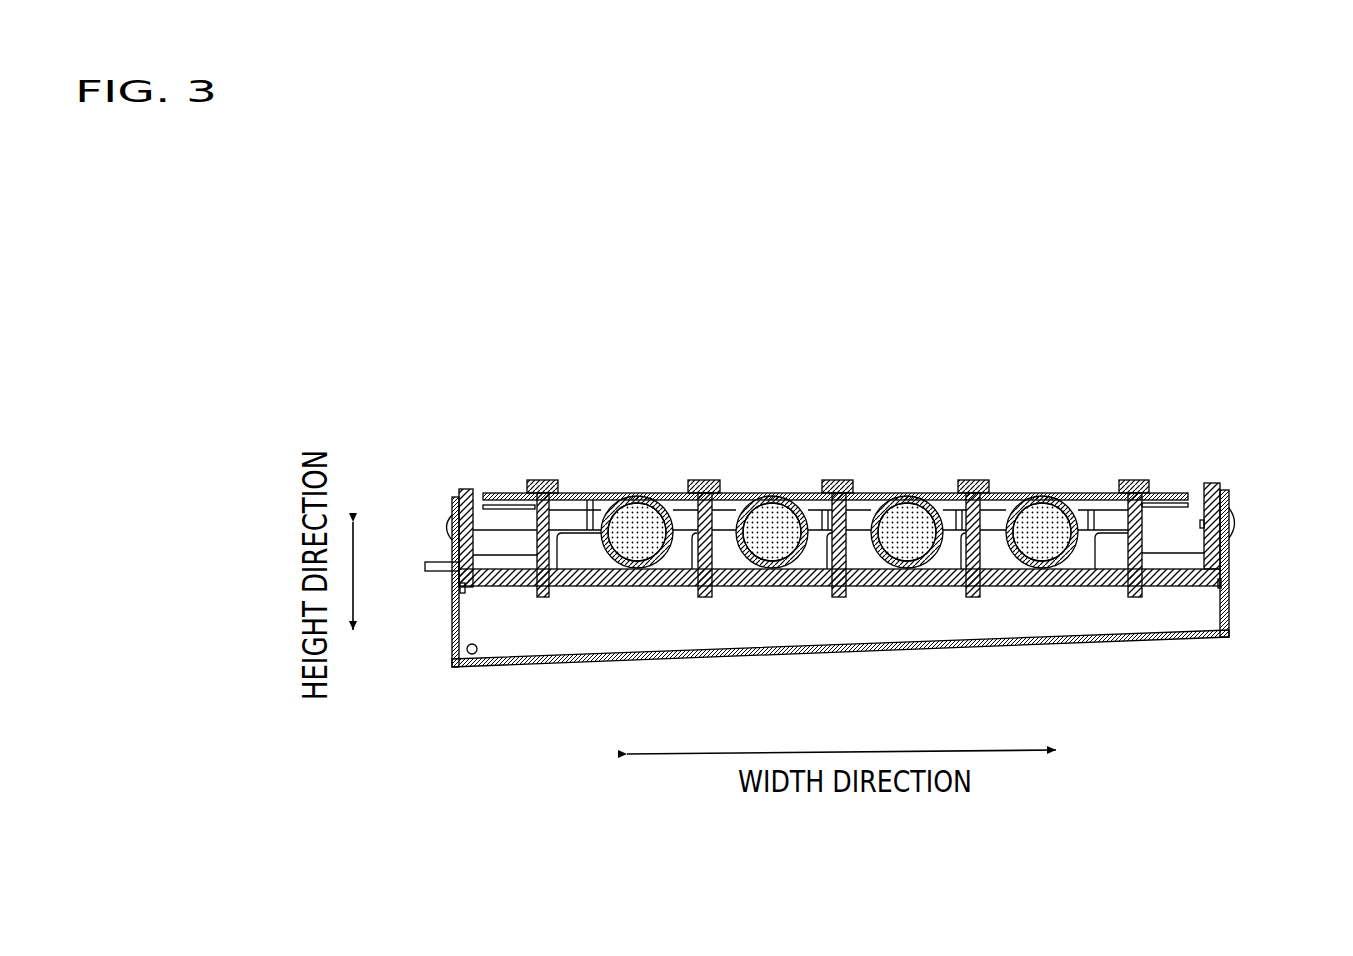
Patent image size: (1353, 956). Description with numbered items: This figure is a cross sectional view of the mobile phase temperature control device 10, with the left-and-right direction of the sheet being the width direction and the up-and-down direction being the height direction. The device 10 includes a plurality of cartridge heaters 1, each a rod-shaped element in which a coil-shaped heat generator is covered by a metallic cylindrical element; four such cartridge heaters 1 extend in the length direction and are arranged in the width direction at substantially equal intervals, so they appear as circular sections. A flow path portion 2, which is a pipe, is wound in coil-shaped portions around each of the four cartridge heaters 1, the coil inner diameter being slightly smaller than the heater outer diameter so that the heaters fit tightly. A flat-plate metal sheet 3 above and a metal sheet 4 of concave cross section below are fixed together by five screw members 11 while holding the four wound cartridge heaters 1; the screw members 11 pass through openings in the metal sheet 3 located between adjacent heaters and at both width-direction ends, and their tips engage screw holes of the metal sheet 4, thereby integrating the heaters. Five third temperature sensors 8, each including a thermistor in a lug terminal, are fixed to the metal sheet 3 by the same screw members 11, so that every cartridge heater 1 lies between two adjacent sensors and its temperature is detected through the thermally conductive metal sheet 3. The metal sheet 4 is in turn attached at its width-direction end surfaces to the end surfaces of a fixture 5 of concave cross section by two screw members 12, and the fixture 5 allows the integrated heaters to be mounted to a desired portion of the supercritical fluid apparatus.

The mobile phase temperature control device 10 is at (1284, 380).
The cartridge heater 1 is at (639, 515).
The flow path portion 2 is at (609, 497).
The metal sheet 3 is at (1170, 493).
The metal sheet 4 is at (507, 590).
The fixture 5 is at (841, 648).
The third temperature sensor 8 is at (527, 482).
The screw member 11 is at (541, 597).
The screw member 12 is at (447, 527).